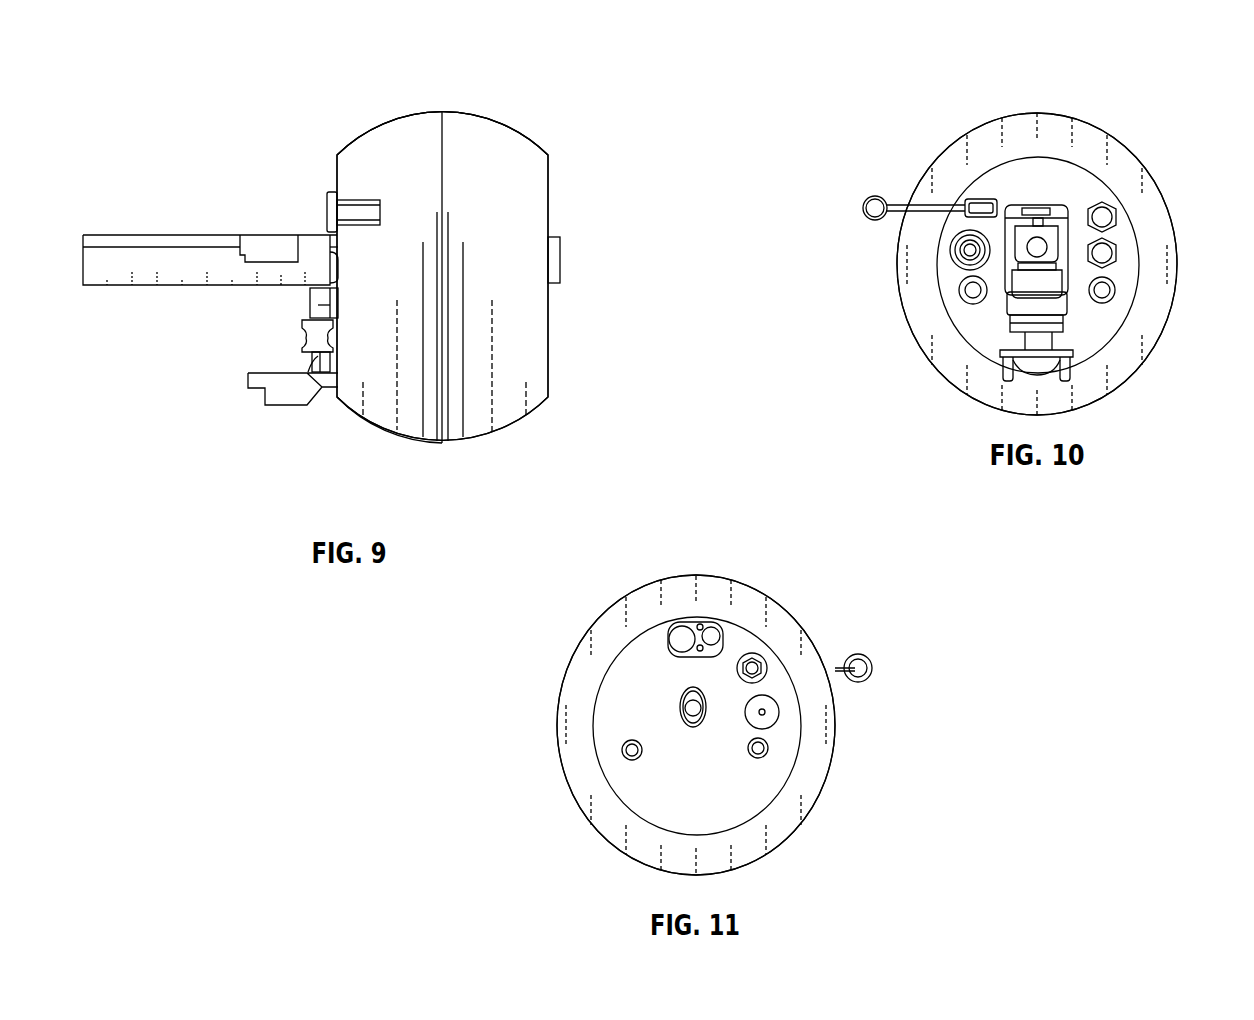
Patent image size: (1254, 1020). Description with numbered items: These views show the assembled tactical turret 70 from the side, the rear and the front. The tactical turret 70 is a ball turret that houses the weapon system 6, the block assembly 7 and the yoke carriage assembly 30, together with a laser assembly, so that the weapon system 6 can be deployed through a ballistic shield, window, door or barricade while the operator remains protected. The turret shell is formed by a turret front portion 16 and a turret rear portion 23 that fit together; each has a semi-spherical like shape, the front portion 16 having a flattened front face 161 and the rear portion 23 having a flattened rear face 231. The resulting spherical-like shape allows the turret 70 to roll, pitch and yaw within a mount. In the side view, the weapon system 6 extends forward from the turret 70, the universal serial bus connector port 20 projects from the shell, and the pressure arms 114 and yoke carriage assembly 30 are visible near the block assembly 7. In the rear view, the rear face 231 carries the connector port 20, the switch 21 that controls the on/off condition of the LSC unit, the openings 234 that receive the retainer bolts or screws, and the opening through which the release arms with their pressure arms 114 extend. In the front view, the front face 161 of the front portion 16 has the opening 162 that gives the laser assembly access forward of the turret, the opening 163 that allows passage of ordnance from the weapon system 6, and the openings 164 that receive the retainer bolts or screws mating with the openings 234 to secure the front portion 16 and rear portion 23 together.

In FIG. 9, the weapon system 6 is at (158, 226).
In FIG. 9, the block assembly 7 is at (328, 414).
In FIG. 9, the turret front portion 16 is at (459, 104).
In FIG. 11, the turret front portion 16 is at (660, 566).
In FIG. 9, the universal serial bus connector port 20 is at (328, 210).
In FIG. 10, the universal serial bus connector port 20 is at (980, 199).
In FIG. 10, the switch 21 is at (1120, 215).
In FIG. 9, the turret rear portion 23 is at (410, 104).
In FIG. 10, the turret rear portion 23 is at (1149, 155).
In FIG. 9, the yoke carriage assembly 30 is at (282, 327).
In FIG. 9, the tactical turret 70 is at (566, 87).
In FIG. 10, the tactical turret 70 is at (1151, 41).
In FIG. 11, the tactical turret 70 is at (789, 541).
In FIG. 9, the pressure arms 114 is at (287, 408).
In FIG. 10, the pressure arms 114 is at (1002, 372).
In FIG. 11, the flattened front face 161 is at (712, 796).
In FIG. 11, the opening 162 is at (695, 621).
In FIG. 11, the opening 163 is at (693, 728).
In FIG. 11, the openings 164 is at (622, 752).
In FIG. 10, the flattened rear face 231 is at (1024, 180).
In FIG. 10, the openings 234 is at (960, 293).